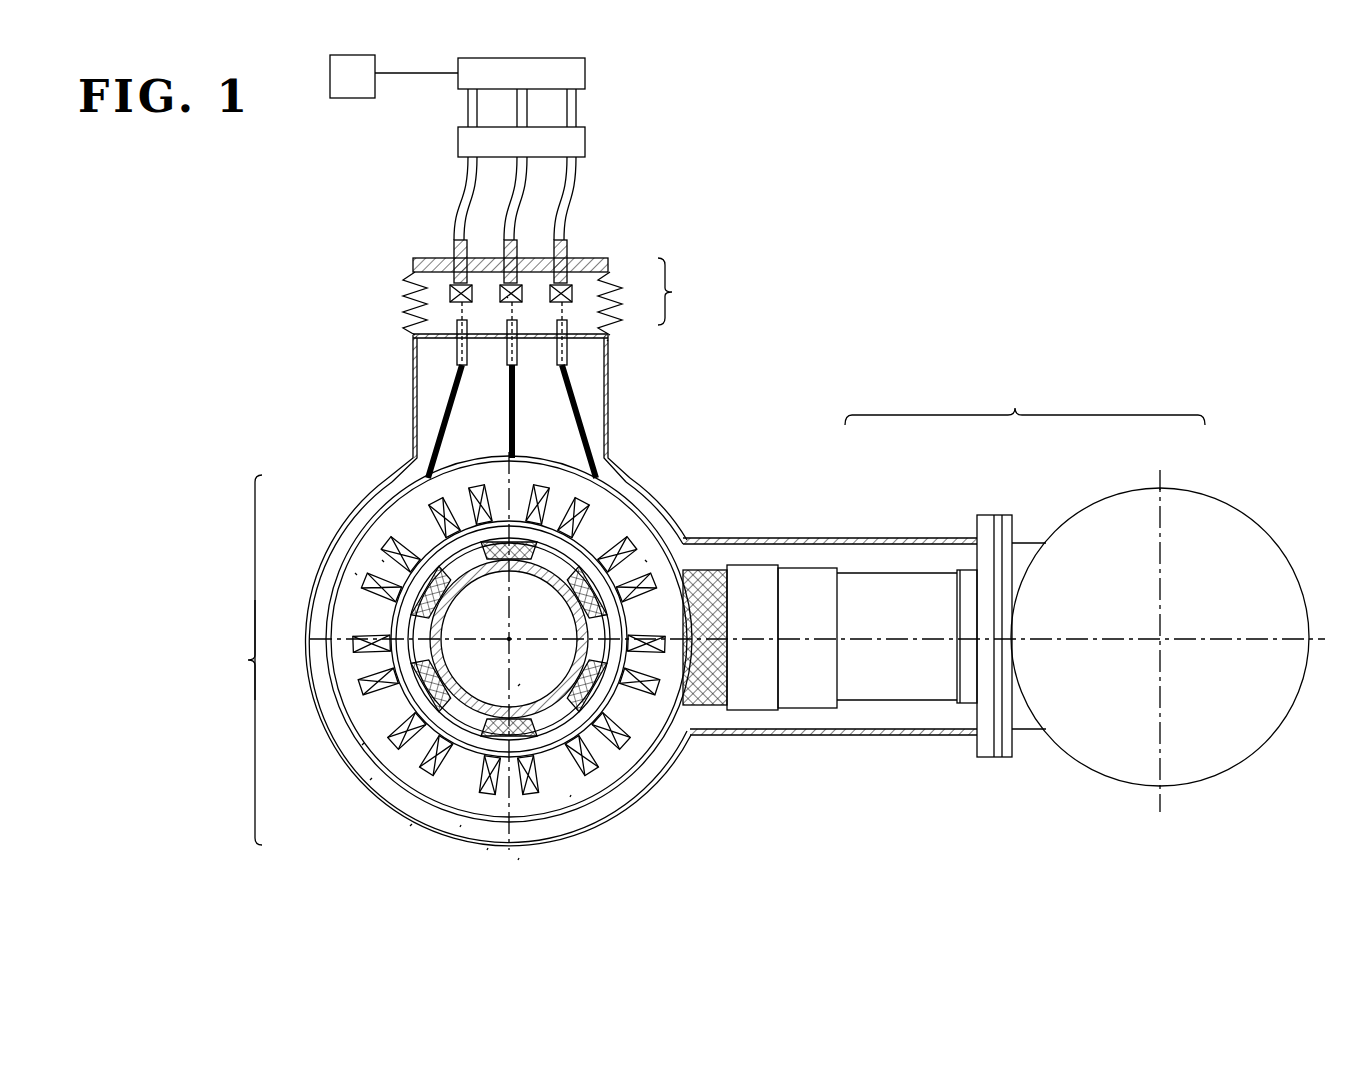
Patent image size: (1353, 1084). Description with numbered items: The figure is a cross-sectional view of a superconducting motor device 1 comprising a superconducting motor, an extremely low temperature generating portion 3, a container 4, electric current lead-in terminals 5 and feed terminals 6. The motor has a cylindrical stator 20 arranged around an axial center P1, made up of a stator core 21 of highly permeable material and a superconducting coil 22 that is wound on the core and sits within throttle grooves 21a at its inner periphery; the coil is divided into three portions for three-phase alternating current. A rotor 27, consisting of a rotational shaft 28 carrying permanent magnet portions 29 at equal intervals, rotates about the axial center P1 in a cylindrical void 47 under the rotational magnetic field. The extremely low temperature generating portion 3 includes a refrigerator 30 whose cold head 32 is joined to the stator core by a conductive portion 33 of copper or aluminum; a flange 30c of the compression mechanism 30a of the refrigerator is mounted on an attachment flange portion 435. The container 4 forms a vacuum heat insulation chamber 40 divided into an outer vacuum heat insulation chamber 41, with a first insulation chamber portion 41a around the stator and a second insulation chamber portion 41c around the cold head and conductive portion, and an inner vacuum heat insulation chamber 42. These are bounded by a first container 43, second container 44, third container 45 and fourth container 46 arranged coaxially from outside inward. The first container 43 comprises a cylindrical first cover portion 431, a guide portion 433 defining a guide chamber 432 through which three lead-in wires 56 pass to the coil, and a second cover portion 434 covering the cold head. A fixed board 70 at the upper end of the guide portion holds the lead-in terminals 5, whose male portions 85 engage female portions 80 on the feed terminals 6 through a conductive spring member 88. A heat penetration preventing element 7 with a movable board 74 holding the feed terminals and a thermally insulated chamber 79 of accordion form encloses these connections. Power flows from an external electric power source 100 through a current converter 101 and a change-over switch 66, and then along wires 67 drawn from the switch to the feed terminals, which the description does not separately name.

The superconducting motor device 1 is at (226, 660).
The extremely low temperature generating portion 3 is at (1025, 396).
The container 4 is at (487, 850).
The electric current lead-in terminals 5 is at (457, 355).
The feed terminals 6 is at (455, 258).
The heat penetration preventing element 7 is at (680, 291).
The stator 20 is at (348, 585).
The stator core 21 is at (570, 797).
The throttle grooves 21a is at (355, 573).
The superconducting coil 22 is at (382, 560).
The rotor 27 is at (450, 665).
The rotational shaft 28 is at (450, 615).
The permanent magnet portions 29 is at (446, 585).
The refrigerator 30 is at (1090, 500).
The compression mechanism 30a is at (1160, 488).
The flange 30c is at (1000, 760).
The cold head 32 is at (812, 578).
The conductive portion 33 is at (724, 568).
The vacuum heat insulation chamber 40 is at (518, 860).
The outer vacuum heat insulation chamber 41 is at (395, 497).
The first insulation chamber portion 41a is at (460, 826).
The second insulation chamber portion 41c is at (885, 546).
The inner vacuum heat insulation chamber 42 is at (433, 557).
The first container 43 is at (377, 850).
The second container 44 is at (410, 826).
The third container 45 is at (370, 780).
The fourth container 46 is at (362, 745).
The void 47 is at (520, 684).
The electric current lead-in wires 56 is at (625, 422).
The change-over switch 66 is at (585, 140).
The wire 67 is at (457, 195).
The fixed board 70 is at (608, 340).
The movable board 74 is at (612, 262).
The thermally insulated chamber 79 is at (403, 300).
The female portions 80 is at (450, 292).
The male portions 85 is at (455, 340).
The spring member 88 is at (507, 298).
The external electric power source 100 is at (352, 98).
The current converter 101 is at (585, 70).
The first cover portion 431 is at (338, 530).
The guide chamber 432 is at (413, 350).
The guide portion 433 is at (413, 430).
The second cover portion 434 is at (930, 545).
The attachment flange portion 435 is at (985, 760).
The axial center P1 is at (512, 637).